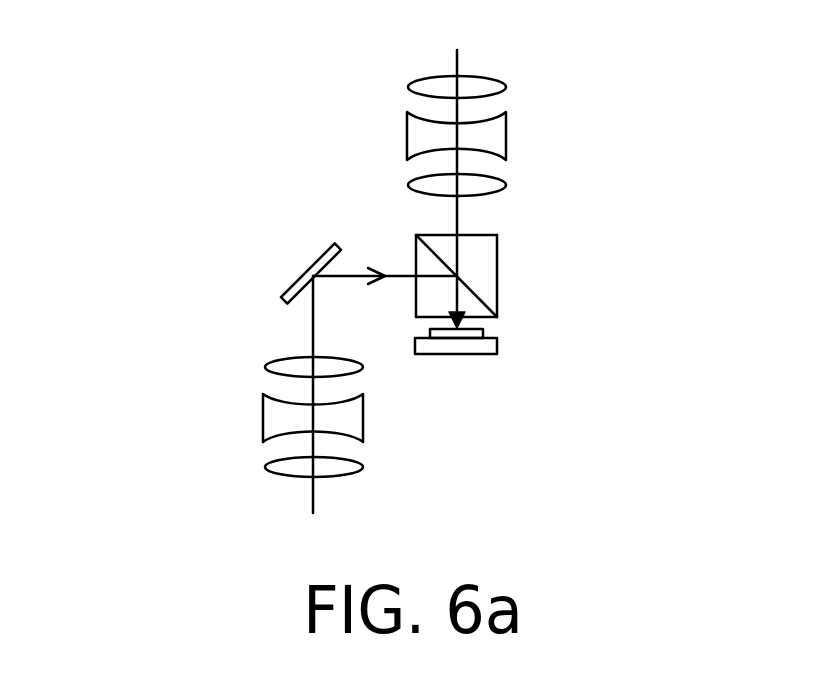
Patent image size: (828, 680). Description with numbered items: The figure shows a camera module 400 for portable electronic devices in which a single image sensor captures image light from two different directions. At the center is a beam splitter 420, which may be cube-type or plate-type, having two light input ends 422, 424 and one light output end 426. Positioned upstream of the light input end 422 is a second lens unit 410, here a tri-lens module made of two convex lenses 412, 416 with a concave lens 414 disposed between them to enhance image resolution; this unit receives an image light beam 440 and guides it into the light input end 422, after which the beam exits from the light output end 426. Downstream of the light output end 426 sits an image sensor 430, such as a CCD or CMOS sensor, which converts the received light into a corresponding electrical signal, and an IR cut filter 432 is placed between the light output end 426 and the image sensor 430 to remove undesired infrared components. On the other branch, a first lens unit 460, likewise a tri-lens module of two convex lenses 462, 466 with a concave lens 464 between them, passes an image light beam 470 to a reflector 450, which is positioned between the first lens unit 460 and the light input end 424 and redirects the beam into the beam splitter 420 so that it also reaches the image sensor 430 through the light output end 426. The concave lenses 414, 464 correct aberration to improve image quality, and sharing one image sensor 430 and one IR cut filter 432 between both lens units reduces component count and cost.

The camera module 400 is at (692, 61).
The second lens unit 410 is at (348, 124).
The convex lens 412 is at (408, 87).
The concave lens 414 is at (407, 135).
The convex lens 416 is at (408, 185).
The beam splitter 420 is at (508, 267).
The light input end 422 is at (495, 236).
The light input end 424 is at (416, 253).
The light output end 426 is at (490, 322).
The image sensor 430 is at (497, 345).
The IR cut filter 432 is at (483, 334).
The image light beam 440 is at (460, 169).
The reflector 450 is at (302, 266).
The first lens unit 460 is at (197, 404).
The convex lens 462 is at (265, 366).
The concave lens 464 is at (263, 416).
The convex lens 466 is at (265, 466).
The image light beam 470 is at (315, 416).